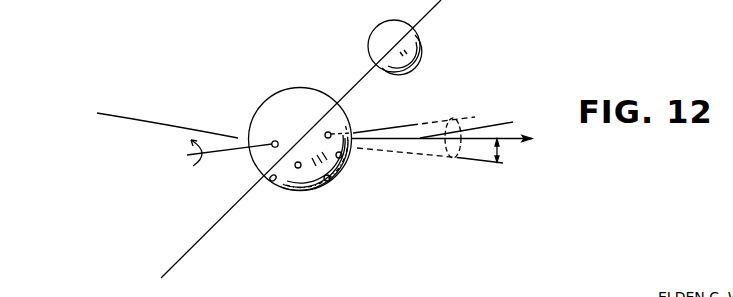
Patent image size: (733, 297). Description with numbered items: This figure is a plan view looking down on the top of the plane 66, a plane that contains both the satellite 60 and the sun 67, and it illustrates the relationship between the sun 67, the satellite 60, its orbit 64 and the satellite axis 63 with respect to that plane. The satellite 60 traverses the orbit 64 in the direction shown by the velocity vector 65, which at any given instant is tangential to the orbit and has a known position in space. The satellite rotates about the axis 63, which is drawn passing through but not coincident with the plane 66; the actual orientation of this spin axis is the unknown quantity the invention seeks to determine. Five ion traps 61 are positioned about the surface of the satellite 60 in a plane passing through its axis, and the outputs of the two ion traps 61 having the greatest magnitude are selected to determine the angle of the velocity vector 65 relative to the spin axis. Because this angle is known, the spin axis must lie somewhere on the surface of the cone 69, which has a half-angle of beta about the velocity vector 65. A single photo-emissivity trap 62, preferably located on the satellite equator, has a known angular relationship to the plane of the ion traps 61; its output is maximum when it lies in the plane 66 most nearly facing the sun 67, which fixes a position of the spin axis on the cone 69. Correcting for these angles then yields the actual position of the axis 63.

The satellite 60 is at (310, 89).
The ion traps 61 is at (274, 141).
The photo-emissivity trap 62 is at (273, 181).
The satellite axis 63 is at (212, 154).
The orbit 64 is at (143, 123).
The velocity vector 65 is at (514, 135).
The plane 66 is at (188, 250).
The sun 67 is at (393, 46).
The cone 69 is at (448, 120).